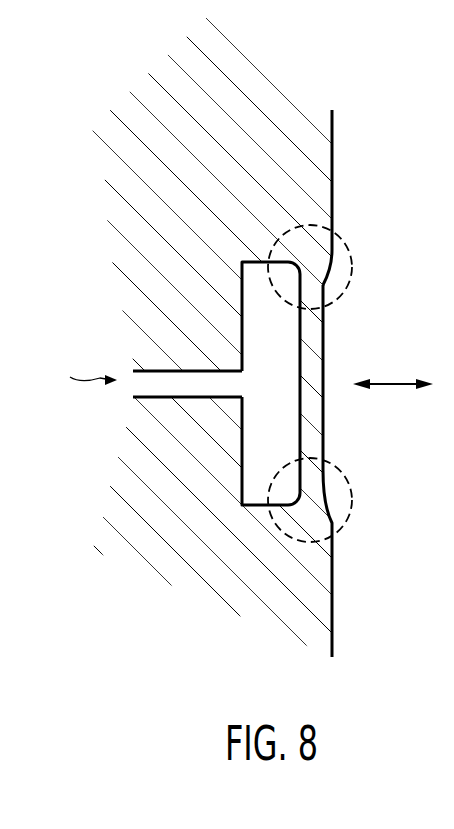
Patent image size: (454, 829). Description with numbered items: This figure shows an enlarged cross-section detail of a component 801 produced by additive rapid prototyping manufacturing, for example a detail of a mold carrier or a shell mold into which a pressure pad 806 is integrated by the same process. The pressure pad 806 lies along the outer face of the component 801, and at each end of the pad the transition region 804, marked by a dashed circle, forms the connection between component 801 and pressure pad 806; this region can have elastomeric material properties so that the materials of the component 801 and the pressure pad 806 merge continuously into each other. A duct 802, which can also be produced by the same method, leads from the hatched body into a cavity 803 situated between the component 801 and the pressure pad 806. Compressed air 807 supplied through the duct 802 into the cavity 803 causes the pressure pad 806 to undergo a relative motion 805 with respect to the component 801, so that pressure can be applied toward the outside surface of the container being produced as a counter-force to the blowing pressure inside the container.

The component 801 is at (284, 105).
The duct 802 is at (163, 390).
The cavity 803 is at (248, 308).
The transition region 804 is at (343, 247).
The relative motion 805 is at (392, 386).
The pressure pad 806 is at (325, 333).
The compressed air 807 is at (72, 377).